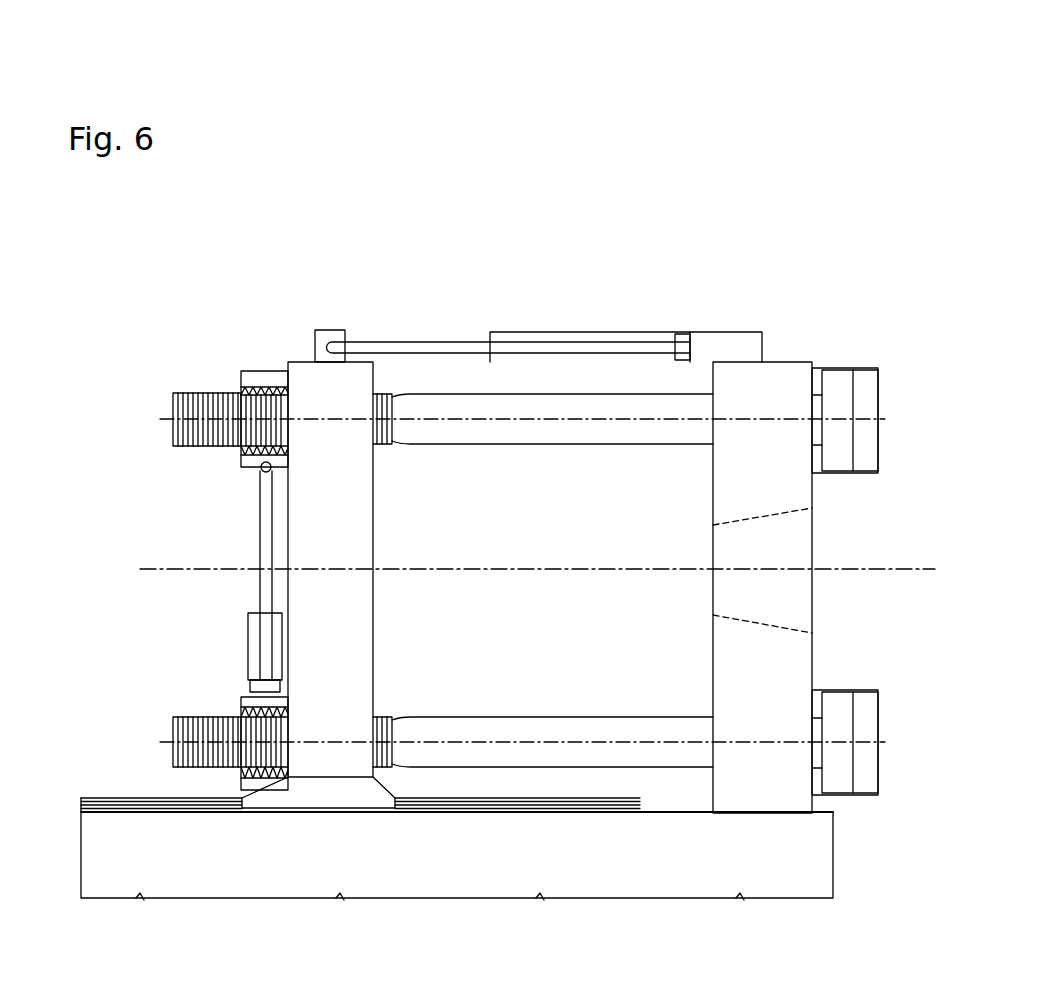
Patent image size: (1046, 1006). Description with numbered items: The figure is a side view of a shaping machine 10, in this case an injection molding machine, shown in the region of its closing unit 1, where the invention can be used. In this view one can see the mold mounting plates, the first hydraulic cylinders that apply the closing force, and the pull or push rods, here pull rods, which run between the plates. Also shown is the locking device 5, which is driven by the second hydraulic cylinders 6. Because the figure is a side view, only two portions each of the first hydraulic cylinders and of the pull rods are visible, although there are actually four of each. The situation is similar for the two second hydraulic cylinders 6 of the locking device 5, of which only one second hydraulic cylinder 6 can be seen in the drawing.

The shaping machine 10 is at (633, 150).
The closing unit 1 is at (698, 256).
The locking device 5 is at (211, 481).
The second hydraulic cylinders 6 is at (237, 667).